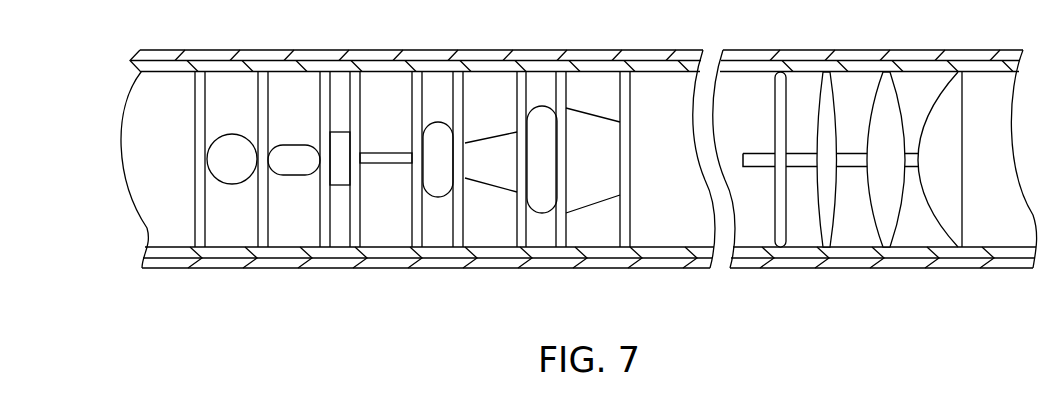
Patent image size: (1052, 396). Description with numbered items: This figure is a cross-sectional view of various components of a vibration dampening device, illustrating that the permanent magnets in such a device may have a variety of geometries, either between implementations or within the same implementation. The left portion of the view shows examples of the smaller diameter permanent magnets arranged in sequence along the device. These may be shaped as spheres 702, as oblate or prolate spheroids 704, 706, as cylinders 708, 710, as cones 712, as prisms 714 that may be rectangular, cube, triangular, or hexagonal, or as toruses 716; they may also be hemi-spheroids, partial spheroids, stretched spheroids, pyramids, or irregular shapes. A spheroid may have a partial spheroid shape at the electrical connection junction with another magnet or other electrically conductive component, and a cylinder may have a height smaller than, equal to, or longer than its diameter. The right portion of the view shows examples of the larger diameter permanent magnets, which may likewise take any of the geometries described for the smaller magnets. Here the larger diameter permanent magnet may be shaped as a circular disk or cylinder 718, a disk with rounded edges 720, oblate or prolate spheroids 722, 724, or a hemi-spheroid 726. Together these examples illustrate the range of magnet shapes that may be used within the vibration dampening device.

The sphere 702 is at (240, 142).
The oblate or prolate spheroid 704 is at (302, 152).
The oblate or prolate spheroid 706 is at (438, 185).
The cylinder 708 is at (338, 175).
The cylinder 710 is at (403, 158).
The cone 712 is at (500, 145).
The prism 714 is at (595, 123).
The torus 716 is at (542, 198).
The circular disk or cylinder 718 is at (627, 210).
The disk with rounded edges 720 is at (788, 88).
The oblate or prolate spheroid 722 is at (838, 88).
The oblate or prolate spheroid 724 is at (898, 88).
The hemi-spheroid 726 is at (953, 212).